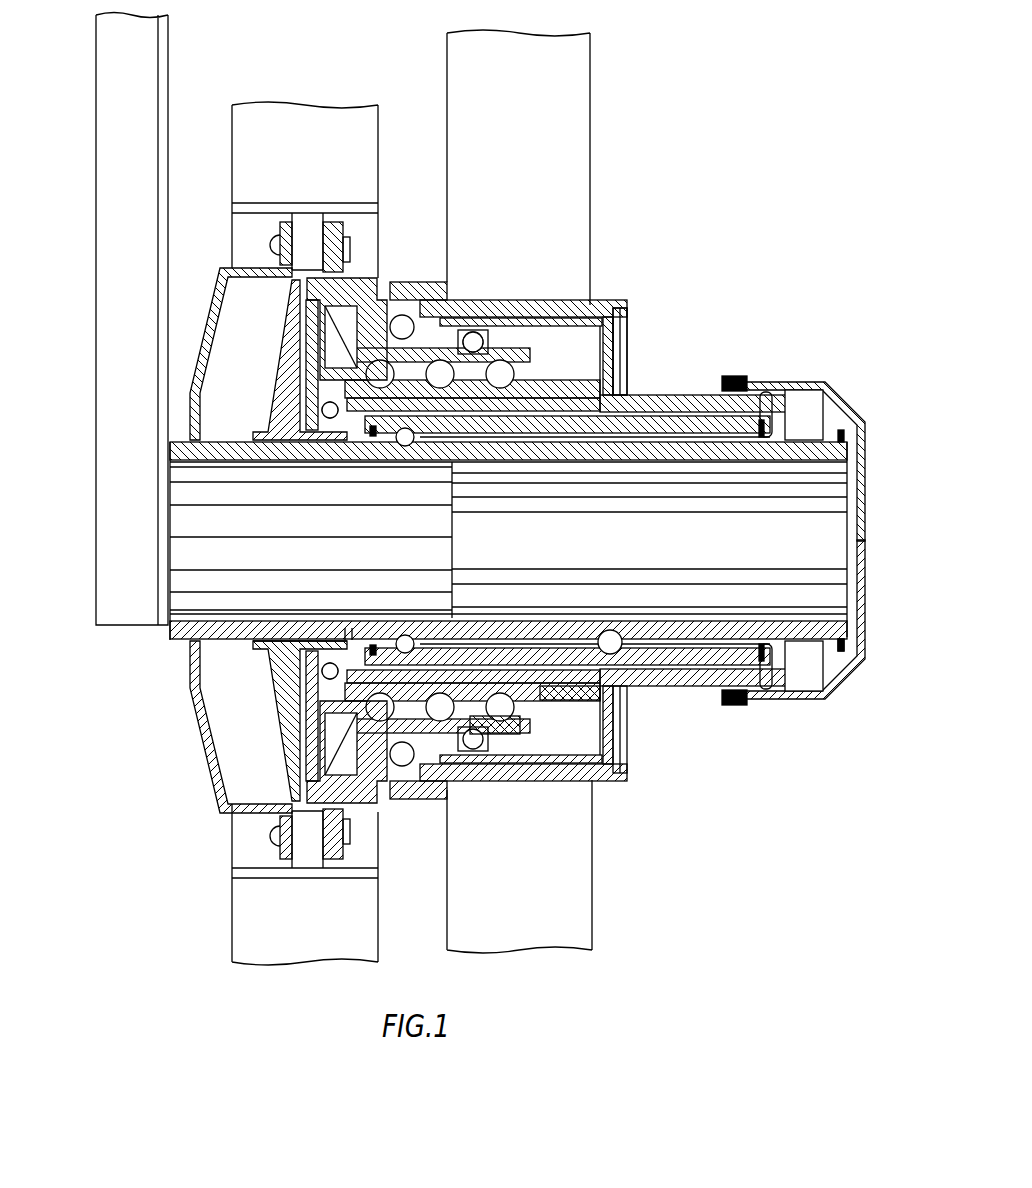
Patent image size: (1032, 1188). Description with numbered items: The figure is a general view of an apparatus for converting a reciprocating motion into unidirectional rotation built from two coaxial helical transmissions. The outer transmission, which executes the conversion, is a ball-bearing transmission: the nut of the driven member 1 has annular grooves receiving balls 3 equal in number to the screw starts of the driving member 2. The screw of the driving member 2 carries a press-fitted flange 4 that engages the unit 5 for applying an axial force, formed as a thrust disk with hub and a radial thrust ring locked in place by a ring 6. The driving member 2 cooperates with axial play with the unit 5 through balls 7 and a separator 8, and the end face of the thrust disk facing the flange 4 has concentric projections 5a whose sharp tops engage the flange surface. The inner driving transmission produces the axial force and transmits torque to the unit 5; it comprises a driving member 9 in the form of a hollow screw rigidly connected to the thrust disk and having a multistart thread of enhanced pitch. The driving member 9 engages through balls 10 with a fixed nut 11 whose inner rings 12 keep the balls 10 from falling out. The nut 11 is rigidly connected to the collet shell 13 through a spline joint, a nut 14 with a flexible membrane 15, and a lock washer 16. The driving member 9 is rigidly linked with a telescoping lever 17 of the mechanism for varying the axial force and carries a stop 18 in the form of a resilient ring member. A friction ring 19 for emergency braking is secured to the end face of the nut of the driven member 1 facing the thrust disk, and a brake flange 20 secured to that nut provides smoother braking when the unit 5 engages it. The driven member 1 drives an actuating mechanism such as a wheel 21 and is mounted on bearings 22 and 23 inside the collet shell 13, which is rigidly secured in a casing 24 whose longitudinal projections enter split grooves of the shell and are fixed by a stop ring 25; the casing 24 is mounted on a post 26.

The driven member 1 is at (360, 807).
The driving member 2 is at (577, 695).
The balls 3 is at (520, 710).
The flange 4 is at (380, 290).
The unit for applying an axial force 5 is at (275, 706).
The concentric projections 5a is at (300, 765).
The ring 6 is at (346, 630).
The balls 7 is at (297, 400).
The separator 8 is at (300, 667).
The driving member 9 is at (810, 456).
The balls 10 is at (607, 630).
The fixed nut 11 is at (630, 420).
The inner rings 12 is at (765, 395).
The collet shell 13 is at (668, 395).
The nut 14 is at (800, 388).
The flexible membrane 15 is at (866, 552).
The lock washer 16 is at (738, 710).
The telescoping lever 17 is at (105, 107).
The stop 18 is at (840, 625).
The friction ring 19 is at (300, 282).
The brake flange 20 is at (192, 662).
The wheel 21 is at (245, 915).
The bearing 22 is at (402, 315).
The bearing 23 is at (477, 300).
The casing 24 is at (536, 300).
The stop ring 25 is at (628, 322).
The post 26 is at (572, 88).